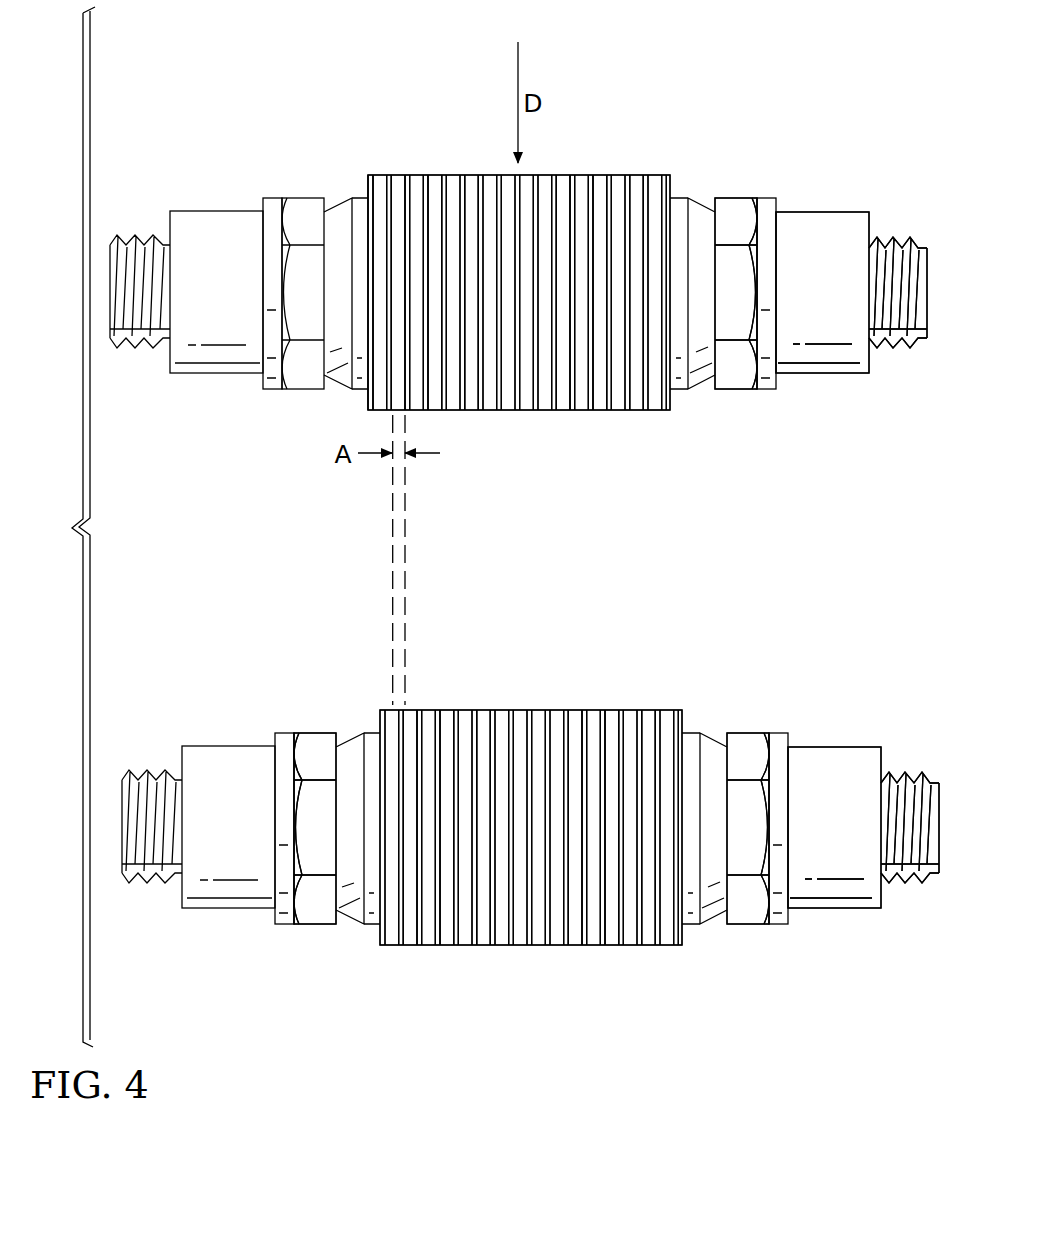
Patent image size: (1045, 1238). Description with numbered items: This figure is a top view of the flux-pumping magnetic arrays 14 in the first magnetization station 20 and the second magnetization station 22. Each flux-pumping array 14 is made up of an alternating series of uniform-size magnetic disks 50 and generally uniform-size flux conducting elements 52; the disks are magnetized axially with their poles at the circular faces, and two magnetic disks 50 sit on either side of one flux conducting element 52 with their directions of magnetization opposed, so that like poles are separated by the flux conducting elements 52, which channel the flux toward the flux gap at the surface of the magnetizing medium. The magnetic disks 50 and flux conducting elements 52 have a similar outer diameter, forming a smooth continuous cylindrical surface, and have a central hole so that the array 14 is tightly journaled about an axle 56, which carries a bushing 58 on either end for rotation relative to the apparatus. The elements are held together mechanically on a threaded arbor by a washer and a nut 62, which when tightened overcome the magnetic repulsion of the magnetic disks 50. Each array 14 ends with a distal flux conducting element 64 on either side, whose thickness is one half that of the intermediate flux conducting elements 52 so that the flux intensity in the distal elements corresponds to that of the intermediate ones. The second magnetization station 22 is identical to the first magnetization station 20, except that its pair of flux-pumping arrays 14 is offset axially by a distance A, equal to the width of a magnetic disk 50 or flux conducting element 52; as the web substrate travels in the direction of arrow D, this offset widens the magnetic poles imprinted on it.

The flux-pumping magnetic array 14 is at (500, 150).
The first magnetization station 20 is at (595, 75).
The second magnetization station 22 is at (577, 665).
The magnetic disk 50 is at (472, 185).
The flux conducting element 52 is at (640, 185).
The axle 56 is at (907, 237).
The bushing 58 is at (820, 212).
The nut 62 is at (733, 390).
The distal flux conducting element 64 is at (368, 187).